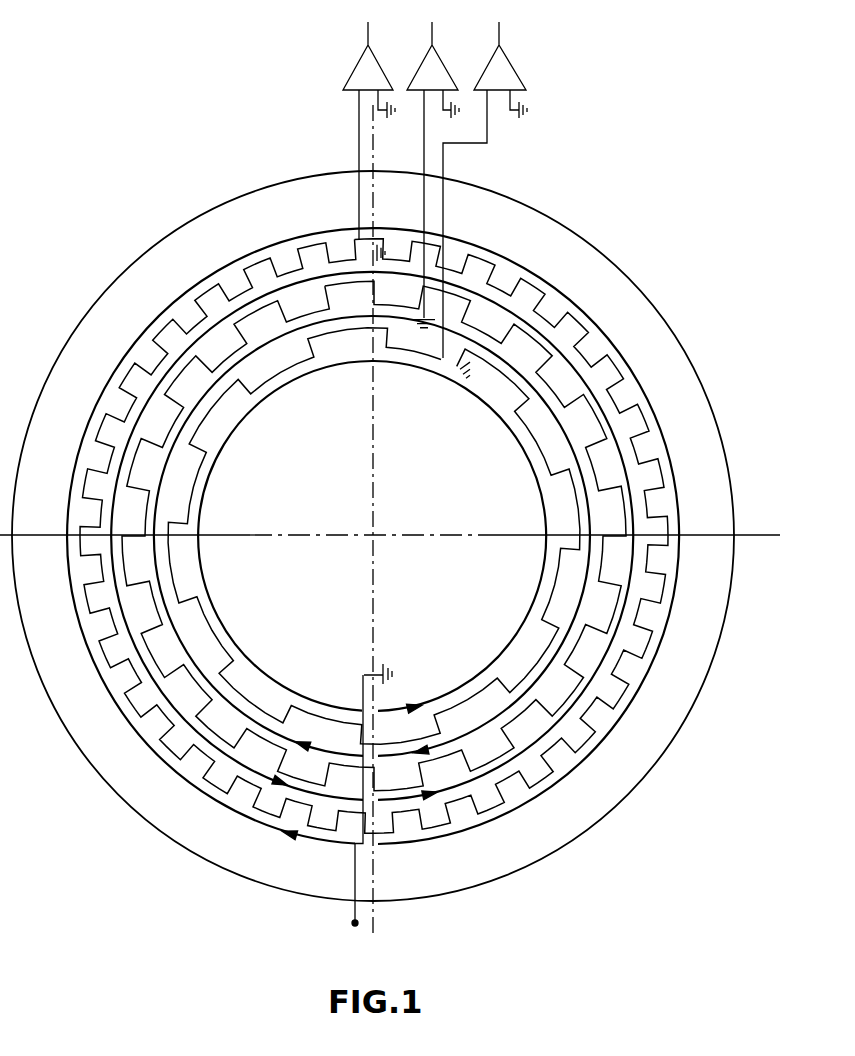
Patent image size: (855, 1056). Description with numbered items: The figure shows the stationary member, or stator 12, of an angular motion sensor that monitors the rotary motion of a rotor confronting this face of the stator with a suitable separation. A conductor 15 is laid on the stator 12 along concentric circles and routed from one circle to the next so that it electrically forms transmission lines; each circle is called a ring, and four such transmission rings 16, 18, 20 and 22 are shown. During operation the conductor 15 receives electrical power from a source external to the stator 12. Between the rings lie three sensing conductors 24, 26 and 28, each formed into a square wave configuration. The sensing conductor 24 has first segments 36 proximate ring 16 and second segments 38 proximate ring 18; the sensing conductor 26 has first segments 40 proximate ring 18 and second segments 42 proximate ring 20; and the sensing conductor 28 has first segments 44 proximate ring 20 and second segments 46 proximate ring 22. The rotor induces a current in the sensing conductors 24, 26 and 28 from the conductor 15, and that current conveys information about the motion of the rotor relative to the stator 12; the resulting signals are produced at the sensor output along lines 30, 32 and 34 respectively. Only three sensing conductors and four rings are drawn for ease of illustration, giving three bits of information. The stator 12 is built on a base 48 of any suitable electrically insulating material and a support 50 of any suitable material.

The stator 12 is at (133, 270).
The conductor 15 is at (375, 923).
The transmission ring 16 is at (83, 430).
The transmission ring 18 is at (132, 352).
The transmission ring 20 is at (226, 390).
The transmission ring 22 is at (207, 480).
The sensing conductor 24 is at (211, 282).
The sensing conductor 26 is at (281, 298).
The sensing conductor 28 is at (328, 332).
The line 30 is at (359, 150).
The line 32 is at (424, 166).
The line 34 is at (488, 143).
The first segments 36 is at (87, 468).
The second segments 38 is at (90, 503).
The first segments 40 is at (117, 553).
The second segments 42 is at (150, 590).
The first segments 44 is at (173, 580).
The second segments 46 is at (215, 633).
The base 48 is at (125, 680).
The support 50 is at (105, 765).